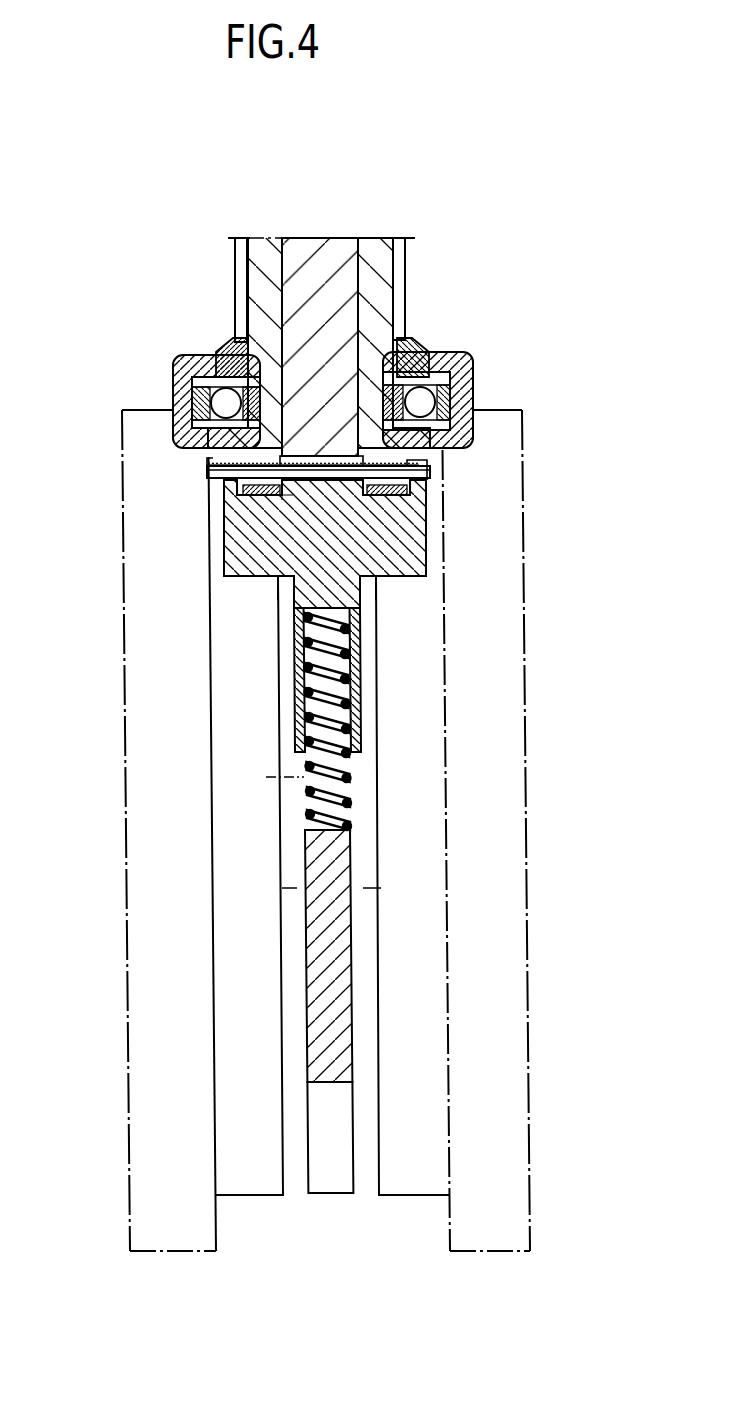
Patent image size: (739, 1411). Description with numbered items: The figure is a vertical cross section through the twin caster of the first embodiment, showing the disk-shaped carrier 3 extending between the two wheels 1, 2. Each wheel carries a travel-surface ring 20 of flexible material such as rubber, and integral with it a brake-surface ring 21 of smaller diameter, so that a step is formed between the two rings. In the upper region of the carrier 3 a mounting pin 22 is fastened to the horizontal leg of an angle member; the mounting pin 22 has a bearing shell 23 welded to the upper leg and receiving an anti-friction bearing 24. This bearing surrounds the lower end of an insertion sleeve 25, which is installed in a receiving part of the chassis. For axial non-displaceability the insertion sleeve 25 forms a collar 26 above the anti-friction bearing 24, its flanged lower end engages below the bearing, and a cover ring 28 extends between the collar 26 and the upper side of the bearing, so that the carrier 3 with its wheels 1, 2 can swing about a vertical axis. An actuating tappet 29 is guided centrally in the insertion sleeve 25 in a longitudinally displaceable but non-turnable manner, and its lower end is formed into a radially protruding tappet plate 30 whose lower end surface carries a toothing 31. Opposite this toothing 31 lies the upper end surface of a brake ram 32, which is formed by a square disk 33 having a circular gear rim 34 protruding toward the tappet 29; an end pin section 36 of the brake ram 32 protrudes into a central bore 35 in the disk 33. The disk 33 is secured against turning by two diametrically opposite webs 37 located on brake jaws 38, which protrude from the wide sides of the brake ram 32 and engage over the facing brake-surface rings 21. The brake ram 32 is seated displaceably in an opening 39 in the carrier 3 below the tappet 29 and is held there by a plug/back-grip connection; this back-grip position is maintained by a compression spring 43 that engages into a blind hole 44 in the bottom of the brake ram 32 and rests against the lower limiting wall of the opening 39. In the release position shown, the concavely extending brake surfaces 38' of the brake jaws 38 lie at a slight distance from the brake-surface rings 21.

The wheel 1 is at (119, 1170).
The wheel 2 is at (540, 1192).
The disk-shaped carrier 3 is at (341, 1027).
The travel-surface ring 20 is at (171, 1251).
The brake-surface ring 21 is at (393, 1196).
The mounting pin 22 is at (419, 272).
The bearing shell 23 is at (472, 370).
The anti-friction bearing 24 is at (450, 408).
The insertion sleeve 25 is at (260, 282).
The collar 26 is at (237, 338).
The cover ring 28 is at (425, 342).
The actuating tappet 29 is at (325, 278).
The tappet plate 30 is at (212, 459).
The toothing 31 is at (218, 470).
The brake ram 32 is at (387, 643).
The square disk 33 is at (426, 515).
The circular gear rim 34 is at (440, 467).
The central bore 35 is at (292, 497).
The end pin section 36 is at (286, 503).
The webs 37 is at (227, 487).
The brake jaws 38 is at (324, 621).
The brake surfaces 38' is at (331, 654).
The opening 39 is at (351, 809).
The compression spring 43 is at (355, 771).
The blind hole 44 is at (349, 713).